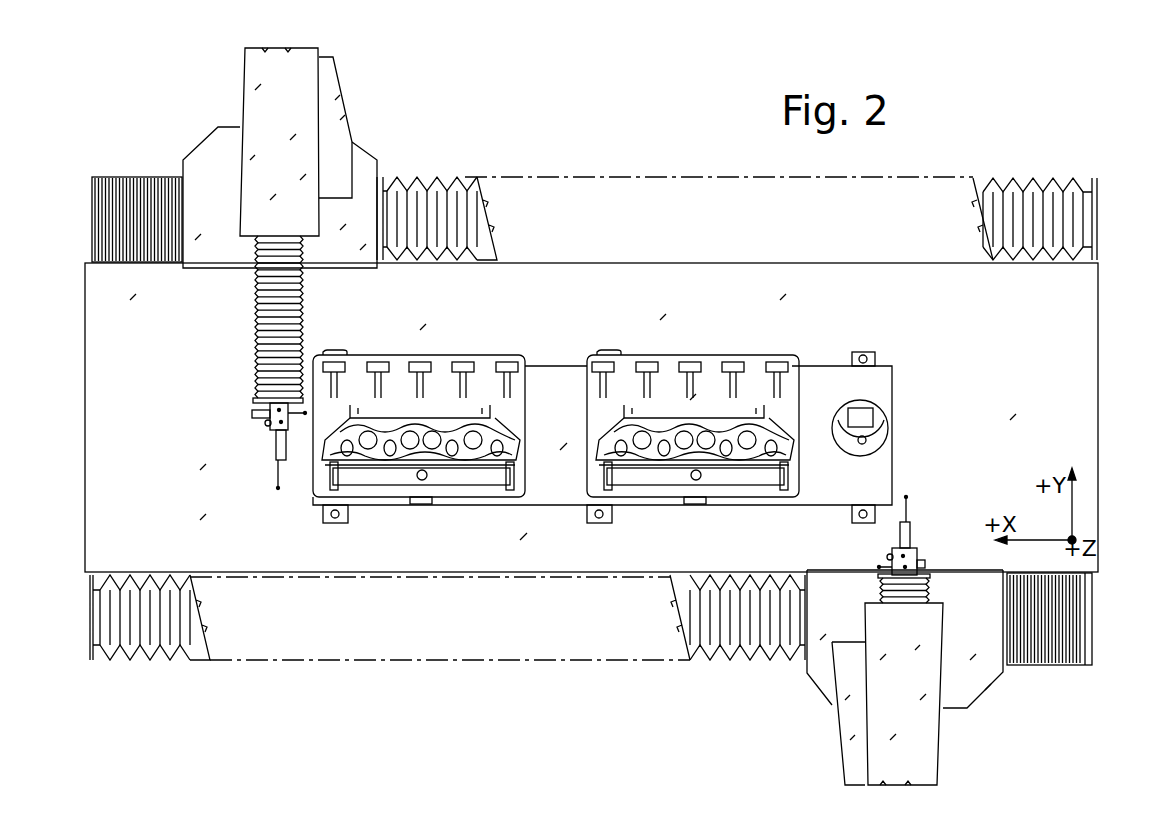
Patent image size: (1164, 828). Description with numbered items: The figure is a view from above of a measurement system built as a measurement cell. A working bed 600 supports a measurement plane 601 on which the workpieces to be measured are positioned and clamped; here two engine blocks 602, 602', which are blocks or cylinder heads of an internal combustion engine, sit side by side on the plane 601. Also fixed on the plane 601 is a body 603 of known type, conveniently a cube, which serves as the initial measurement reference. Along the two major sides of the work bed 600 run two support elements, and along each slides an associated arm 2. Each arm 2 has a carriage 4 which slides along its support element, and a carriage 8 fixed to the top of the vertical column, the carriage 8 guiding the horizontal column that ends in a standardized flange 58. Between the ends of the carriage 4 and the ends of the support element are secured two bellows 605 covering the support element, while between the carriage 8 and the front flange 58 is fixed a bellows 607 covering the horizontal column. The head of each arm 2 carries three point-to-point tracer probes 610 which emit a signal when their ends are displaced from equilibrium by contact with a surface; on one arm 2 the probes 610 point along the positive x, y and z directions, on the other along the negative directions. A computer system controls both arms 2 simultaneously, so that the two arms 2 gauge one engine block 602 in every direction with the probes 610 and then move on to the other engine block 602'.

The arm 2 is at (230, 162).
The carriage 4 is at (380, 153).
The carriage 8 is at (236, 210).
The standardized flange 58 is at (255, 400).
The working bed 600 is at (1043, 383).
The measurement plane 601 is at (883, 378).
The engine block 602 is at (693, 404).
The engine block 602' is at (452, 406).
The body 603 is at (892, 413).
The bellows 605 is at (153, 178).
The bellows 607 is at (260, 327).
The tracer probes 610 is at (278, 433).